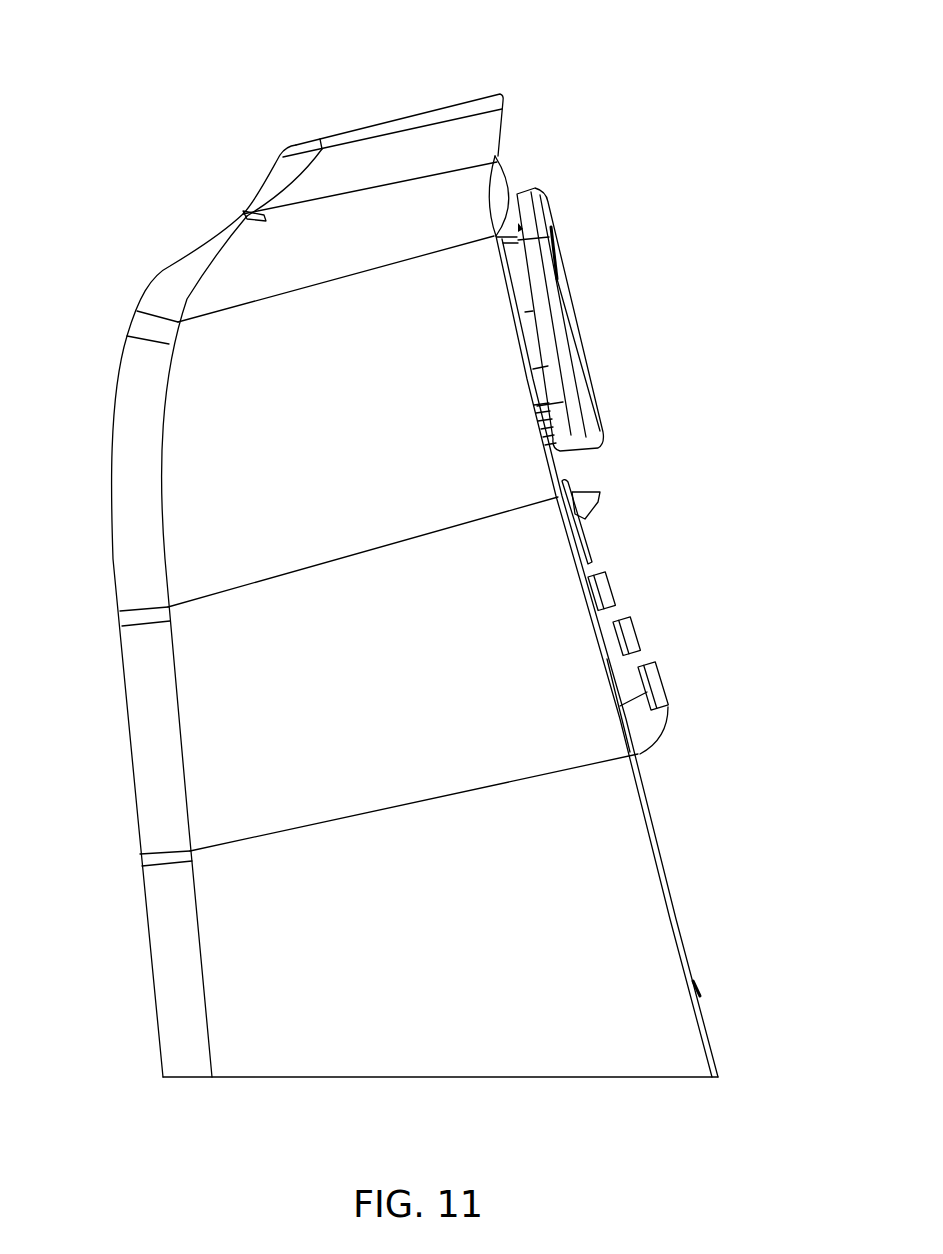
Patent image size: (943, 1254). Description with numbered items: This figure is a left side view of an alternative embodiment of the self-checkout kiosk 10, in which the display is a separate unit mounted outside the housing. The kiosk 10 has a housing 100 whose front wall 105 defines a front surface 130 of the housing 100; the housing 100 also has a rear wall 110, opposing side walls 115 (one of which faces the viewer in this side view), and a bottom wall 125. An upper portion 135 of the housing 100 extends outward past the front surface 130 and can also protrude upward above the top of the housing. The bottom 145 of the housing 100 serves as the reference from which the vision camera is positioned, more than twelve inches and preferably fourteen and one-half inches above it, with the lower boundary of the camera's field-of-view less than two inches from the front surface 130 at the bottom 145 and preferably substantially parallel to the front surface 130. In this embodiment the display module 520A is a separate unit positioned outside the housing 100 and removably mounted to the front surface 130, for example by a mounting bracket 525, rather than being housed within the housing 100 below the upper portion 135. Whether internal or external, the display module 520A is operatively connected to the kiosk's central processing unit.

The self-checkout kiosk 10 is at (143, 89).
The housing 100 is at (157, 260).
The front wall 105 is at (592, 567).
The rear wall 110 is at (113, 513).
The side walls 115 is at (214, 758).
The bottom wall 125 is at (463, 1080).
The front surface 130 is at (622, 640).
The upper portion 135 is at (386, 112).
The bottom 145 is at (738, 1067).
The display module 520A is at (577, 318).
The mounting bracket 525 is at (494, 157).